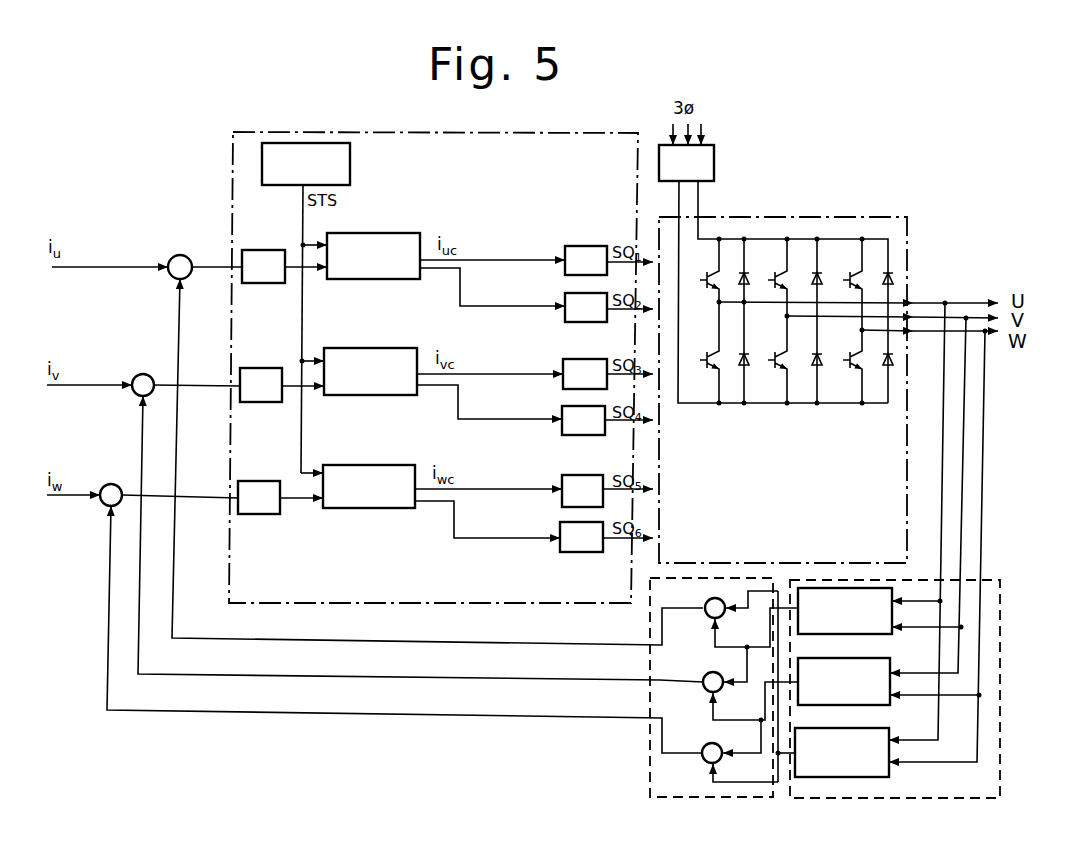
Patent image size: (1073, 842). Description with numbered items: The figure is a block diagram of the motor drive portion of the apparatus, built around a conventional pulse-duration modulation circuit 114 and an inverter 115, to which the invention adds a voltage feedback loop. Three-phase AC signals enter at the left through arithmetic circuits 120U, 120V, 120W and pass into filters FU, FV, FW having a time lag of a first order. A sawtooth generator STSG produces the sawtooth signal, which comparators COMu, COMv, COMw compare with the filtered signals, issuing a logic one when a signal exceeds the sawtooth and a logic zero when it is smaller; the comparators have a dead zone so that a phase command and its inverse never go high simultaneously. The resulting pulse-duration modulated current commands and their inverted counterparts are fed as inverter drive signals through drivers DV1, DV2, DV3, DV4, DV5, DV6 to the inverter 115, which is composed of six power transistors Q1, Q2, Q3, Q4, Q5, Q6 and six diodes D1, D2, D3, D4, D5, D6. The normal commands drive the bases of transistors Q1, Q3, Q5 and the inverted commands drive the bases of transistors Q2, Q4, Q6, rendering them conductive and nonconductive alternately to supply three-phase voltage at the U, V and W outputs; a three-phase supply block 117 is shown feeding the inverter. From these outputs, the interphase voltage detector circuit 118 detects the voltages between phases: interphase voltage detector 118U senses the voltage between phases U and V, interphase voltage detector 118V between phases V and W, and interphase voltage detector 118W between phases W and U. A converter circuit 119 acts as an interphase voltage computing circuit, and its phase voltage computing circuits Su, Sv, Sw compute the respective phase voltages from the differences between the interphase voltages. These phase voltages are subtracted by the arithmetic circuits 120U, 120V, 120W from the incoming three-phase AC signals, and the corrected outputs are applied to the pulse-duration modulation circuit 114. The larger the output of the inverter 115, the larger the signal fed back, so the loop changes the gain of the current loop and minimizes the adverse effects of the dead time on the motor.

The pulse-duration modulation circuit 114 is at (629, 161).
The inverter 115 is at (822, 217).
The rectifier 117 is at (714, 166).
The interphase voltage detector circuit 118 is at (1000, 582).
The interphase voltage detector 118U is at (848, 634).
The interphase voltage detector 118V is at (875, 705).
The interphase voltage detector 118W is at (885, 777).
The converter circuit 119 is at (662, 774).
The arithmetic circuit 120U is at (180, 255).
The arithmetic circuit 120V is at (144, 374).
The arithmetic circuit 120W is at (111, 484).
The sawtooth generator STSG is at (350, 165).
The filter FU is at (263, 266).
The filter FV is at (261, 385).
The filter FW is at (259, 497).
The comparator COMu is at (370, 279).
The comparator COMv is at (372, 395).
The comparator COMw is at (368, 508).
The driver DV1 is at (586, 260).
The driver DV2 is at (586, 307).
The driver DV3 is at (585, 374).
The driver DV4 is at (583, 420).
The driver DV5 is at (582, 491).
The driver DV6 is at (581, 537).
The power transistor Q1 is at (707, 270).
The power transistor Q2 is at (707, 352).
The power transistor Q3 is at (774, 277).
The power transistor Q4 is at (772, 359).
The power transistor Q5 is at (848, 284).
The power transistor Q6 is at (846, 366).
The diode D1 is at (755, 272).
The diode D2 is at (751, 352).
The diode D3 is at (828, 277).
The diode D4 is at (824, 359).
The diode D5 is at (906, 285).
The diode D6 is at (878, 373).
The phase voltage computing circuit Su is at (703, 605).
The phase voltage computing circuit Sv is at (703, 679).
The phase voltage computing circuit Sw is at (702, 746).